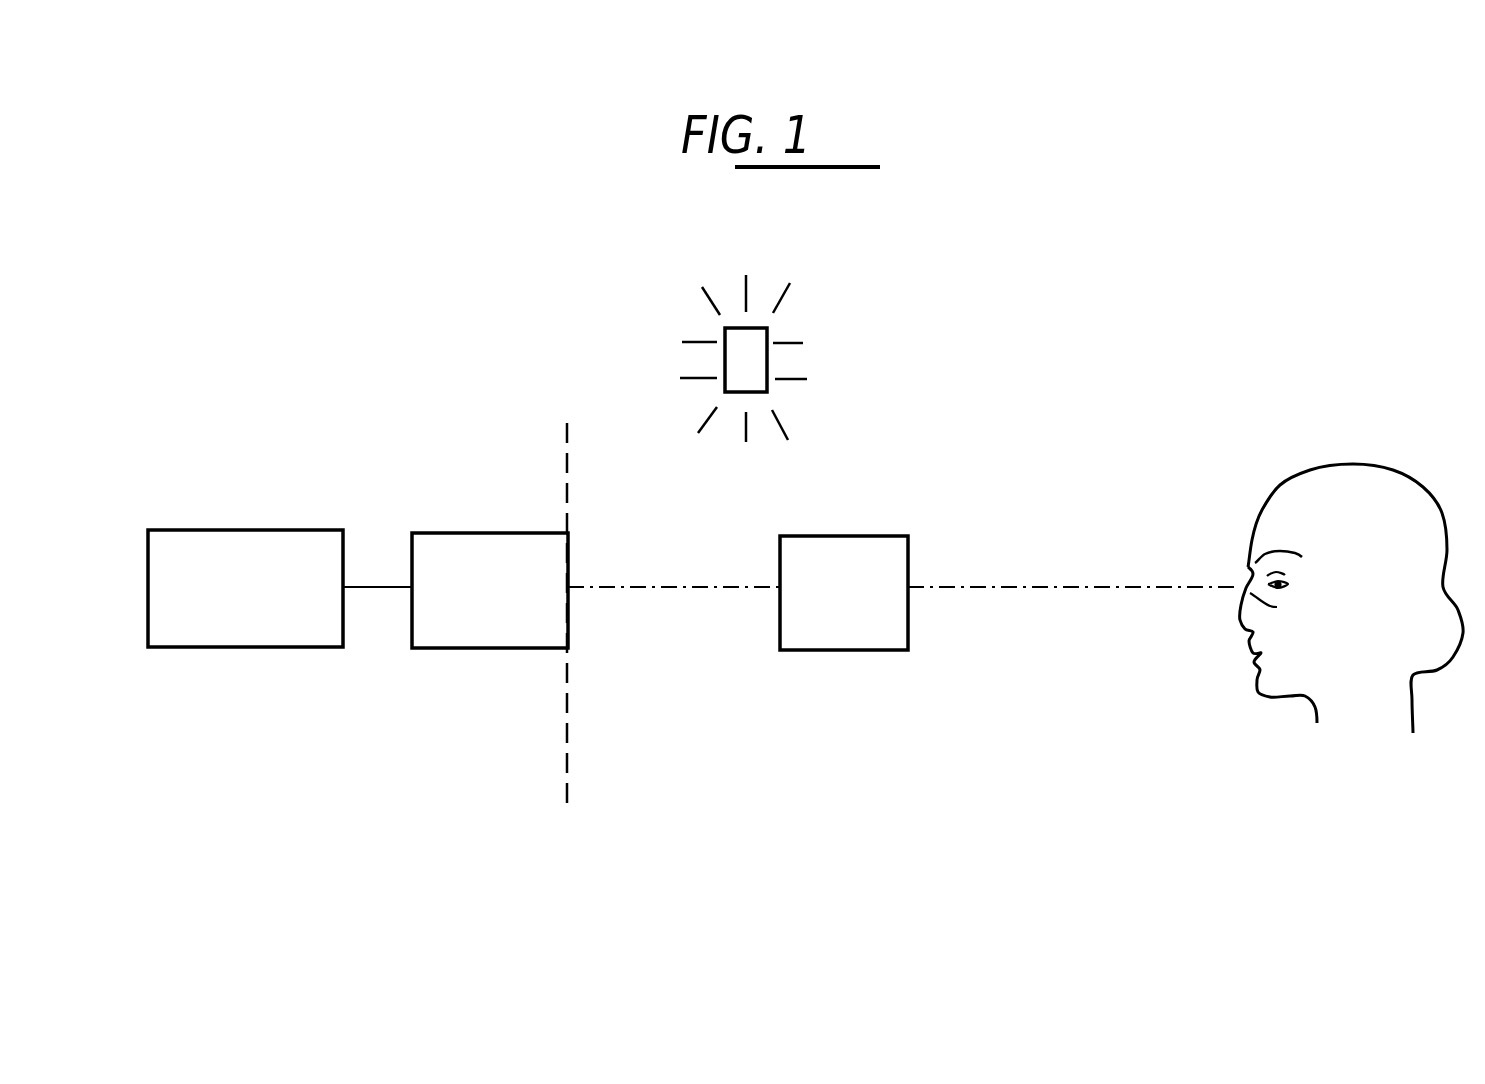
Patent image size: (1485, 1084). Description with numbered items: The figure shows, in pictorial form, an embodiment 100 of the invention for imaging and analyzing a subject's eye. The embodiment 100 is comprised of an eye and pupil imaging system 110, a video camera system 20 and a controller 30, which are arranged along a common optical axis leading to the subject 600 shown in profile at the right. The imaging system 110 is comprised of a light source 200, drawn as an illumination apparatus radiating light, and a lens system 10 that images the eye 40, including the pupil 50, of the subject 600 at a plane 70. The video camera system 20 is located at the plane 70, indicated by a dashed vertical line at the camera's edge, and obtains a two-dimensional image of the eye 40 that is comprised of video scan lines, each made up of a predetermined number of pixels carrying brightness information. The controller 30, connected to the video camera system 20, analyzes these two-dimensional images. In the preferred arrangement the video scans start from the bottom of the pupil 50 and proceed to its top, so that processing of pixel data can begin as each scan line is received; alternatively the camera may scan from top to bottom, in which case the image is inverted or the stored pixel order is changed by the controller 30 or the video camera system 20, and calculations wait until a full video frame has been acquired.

The lens system 10 is at (865, 536).
The video camera system 20 is at (470, 649).
The controller 30 is at (252, 648).
The eye 40 is at (1247, 611).
The pupil 50 is at (1251, 582).
The plane 70 is at (569, 684).
The embodiment 100 is at (492, 453).
The eye and pupil imaging system 110 is at (893, 418).
The light source 200 is at (768, 328).
The subject 600 is at (1358, 445).